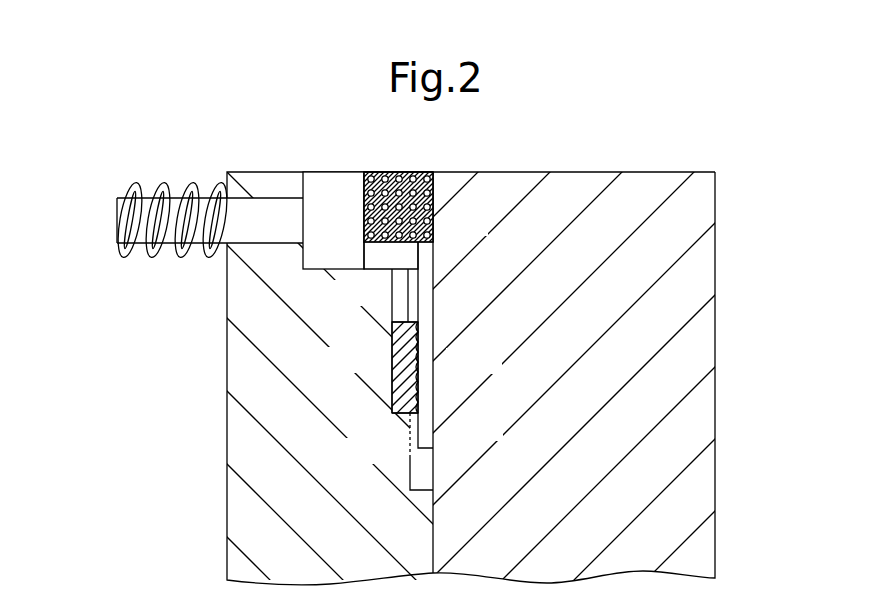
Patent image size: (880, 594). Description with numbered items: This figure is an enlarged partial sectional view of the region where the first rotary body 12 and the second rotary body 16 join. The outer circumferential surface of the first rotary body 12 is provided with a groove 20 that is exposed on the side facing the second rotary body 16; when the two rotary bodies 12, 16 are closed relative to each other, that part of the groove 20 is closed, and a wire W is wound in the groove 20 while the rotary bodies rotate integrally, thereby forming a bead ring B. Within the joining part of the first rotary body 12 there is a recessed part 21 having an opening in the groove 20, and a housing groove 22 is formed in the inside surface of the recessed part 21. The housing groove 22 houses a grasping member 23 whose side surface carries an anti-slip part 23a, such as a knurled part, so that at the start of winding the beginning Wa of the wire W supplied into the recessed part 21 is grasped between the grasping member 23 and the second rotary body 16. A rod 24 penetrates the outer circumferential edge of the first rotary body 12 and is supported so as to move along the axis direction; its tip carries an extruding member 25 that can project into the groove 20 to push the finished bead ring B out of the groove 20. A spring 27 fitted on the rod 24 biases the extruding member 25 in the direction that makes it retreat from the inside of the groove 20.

The first rotary body 12 is at (236, 432).
The second rotary body 16 is at (713, 467).
The groove 20 is at (432, 238).
The recessed part 21 is at (410, 453).
The housing groove 22 is at (400, 293).
The grasping member 23 is at (398, 370).
The anti-slip part 23a is at (419, 368).
The rod 24 is at (127, 200).
The extruding member 25 is at (330, 181).
The spring 27 is at (196, 184).
The wire W is at (372, 172).
The bead ring B is at (418, 171).
The beginning of the wire Wa is at (433, 418).